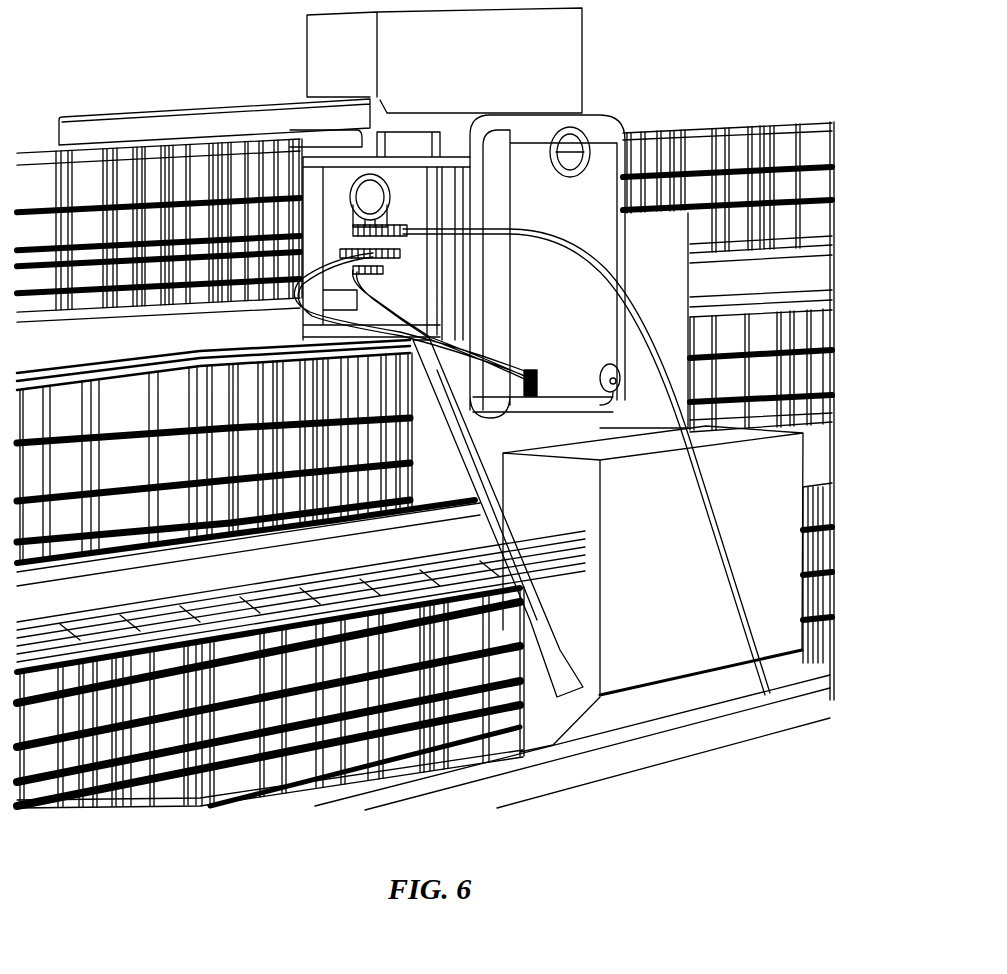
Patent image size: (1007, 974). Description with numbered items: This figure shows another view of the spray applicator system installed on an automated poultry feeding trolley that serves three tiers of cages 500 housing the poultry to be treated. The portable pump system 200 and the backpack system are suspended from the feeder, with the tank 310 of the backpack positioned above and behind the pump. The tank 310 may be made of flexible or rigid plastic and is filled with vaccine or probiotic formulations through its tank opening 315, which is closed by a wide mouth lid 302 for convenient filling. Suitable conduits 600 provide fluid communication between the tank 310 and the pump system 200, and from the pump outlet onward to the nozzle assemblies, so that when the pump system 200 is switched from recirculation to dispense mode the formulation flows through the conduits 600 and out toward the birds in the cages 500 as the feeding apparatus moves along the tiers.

The portable pump system 200 is at (337, 197).
The wide mouth lid 302 is at (580, 117).
The tank/reservoir 310 is at (582, 321).
The tank opening 315 is at (553, 150).
The cages 500 is at (738, 128).
The conduits 600 is at (728, 538).